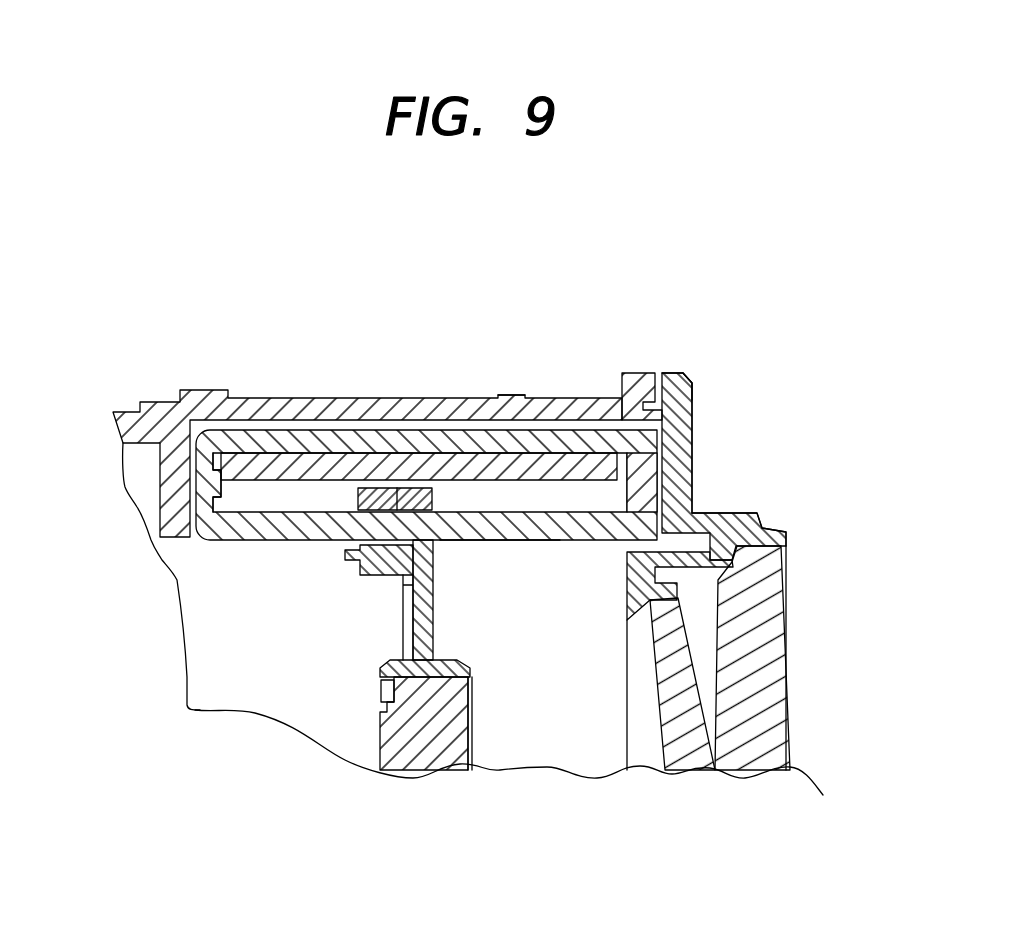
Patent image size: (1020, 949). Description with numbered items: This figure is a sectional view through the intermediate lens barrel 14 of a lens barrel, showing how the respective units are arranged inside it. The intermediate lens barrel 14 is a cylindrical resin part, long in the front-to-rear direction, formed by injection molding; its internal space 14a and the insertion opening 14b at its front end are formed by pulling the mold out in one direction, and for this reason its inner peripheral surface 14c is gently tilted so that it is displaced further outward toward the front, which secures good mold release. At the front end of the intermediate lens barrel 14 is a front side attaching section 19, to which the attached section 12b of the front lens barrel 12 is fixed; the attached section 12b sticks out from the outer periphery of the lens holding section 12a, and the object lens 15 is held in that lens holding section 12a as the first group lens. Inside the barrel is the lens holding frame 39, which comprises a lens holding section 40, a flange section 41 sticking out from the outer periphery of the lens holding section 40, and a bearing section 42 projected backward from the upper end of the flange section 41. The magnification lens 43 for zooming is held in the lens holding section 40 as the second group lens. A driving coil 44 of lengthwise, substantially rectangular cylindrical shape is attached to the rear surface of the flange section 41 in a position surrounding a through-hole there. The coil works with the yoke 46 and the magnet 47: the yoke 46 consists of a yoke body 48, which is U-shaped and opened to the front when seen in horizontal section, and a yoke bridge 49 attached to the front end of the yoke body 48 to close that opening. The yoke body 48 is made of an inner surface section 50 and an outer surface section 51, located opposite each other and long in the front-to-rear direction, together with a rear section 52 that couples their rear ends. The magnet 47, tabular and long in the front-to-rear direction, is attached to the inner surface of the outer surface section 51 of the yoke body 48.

The front lens barrel 12 is at (672, 375).
The lens holding section 12a is at (757, 523).
The attached section 12b is at (673, 393).
The intermediate lens barrel 14 is at (320, 403).
The internal space 14a is at (316, 688).
The insertion opening 14b is at (677, 442).
The inner peripheral surface 14c is at (433, 441).
The object lens 15 is at (785, 735).
The front side attaching section 19 is at (628, 375).
The lens holding frame 39 is at (417, 620).
The lens holding section 40 is at (383, 706).
The flange section 41 is at (404, 634).
The bearing section 42 is at (433, 441).
The magnification lens 43 is at (432, 745).
The driving coil 44 is at (377, 578).
The yoke 46 is at (523, 540).
The magnet 47 is at (563, 477).
The yoke body 48 is at (503, 540).
The yoke bridge 49 is at (650, 488).
The inner surface section 50 is at (473, 540).
The outer surface section 51 is at (277, 433).
The rear section 52 is at (203, 476).